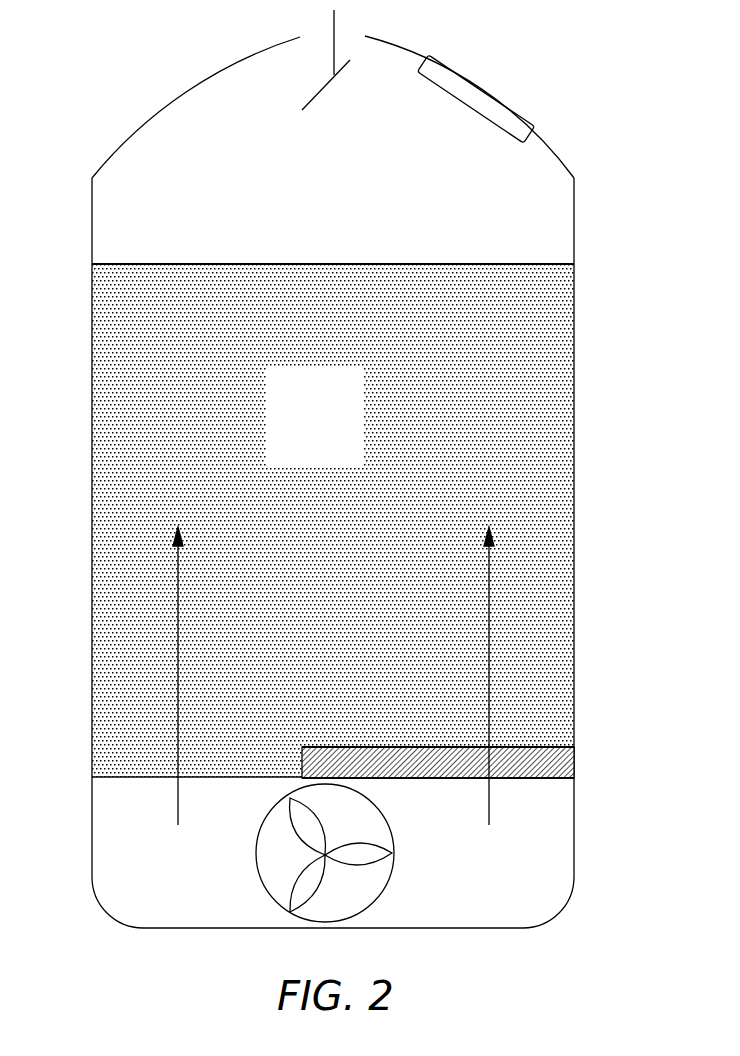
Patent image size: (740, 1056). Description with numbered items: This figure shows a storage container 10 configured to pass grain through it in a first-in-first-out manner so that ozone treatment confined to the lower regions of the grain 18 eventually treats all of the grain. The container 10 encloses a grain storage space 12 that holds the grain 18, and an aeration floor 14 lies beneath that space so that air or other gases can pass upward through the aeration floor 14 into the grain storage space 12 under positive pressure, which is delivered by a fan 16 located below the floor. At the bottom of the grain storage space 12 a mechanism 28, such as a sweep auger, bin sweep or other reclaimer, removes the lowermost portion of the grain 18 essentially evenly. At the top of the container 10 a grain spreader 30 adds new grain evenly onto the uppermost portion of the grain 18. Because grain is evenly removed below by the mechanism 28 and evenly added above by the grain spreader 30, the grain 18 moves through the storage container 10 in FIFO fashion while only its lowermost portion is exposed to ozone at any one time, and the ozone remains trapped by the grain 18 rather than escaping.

The storage container 10 is at (115, 92).
The grain storage space 12 is at (592, 263).
The aeration floor 14 is at (128, 777).
The fan 16 is at (257, 857).
The grain 18 is at (112, 438).
The mechanism for removing a lowermost portion of the grain 28 is at (557, 747).
The grain spreader 30 is at (312, 100).